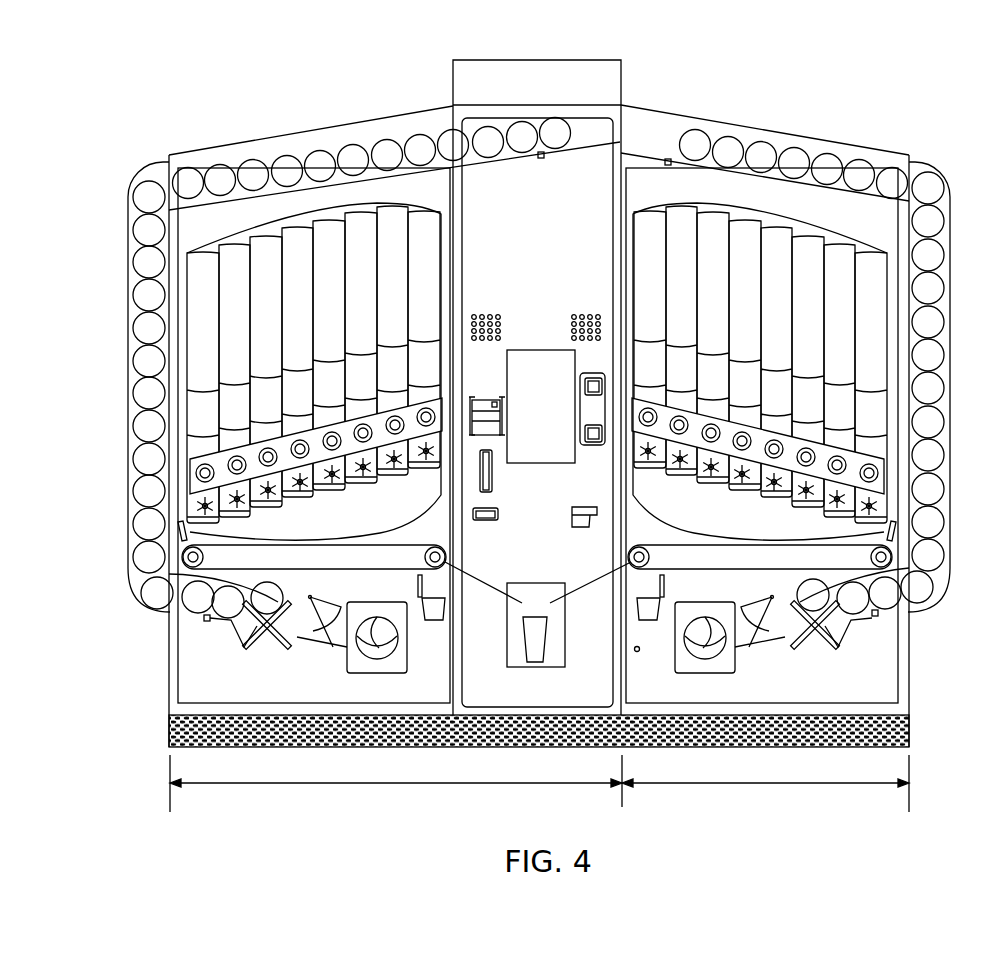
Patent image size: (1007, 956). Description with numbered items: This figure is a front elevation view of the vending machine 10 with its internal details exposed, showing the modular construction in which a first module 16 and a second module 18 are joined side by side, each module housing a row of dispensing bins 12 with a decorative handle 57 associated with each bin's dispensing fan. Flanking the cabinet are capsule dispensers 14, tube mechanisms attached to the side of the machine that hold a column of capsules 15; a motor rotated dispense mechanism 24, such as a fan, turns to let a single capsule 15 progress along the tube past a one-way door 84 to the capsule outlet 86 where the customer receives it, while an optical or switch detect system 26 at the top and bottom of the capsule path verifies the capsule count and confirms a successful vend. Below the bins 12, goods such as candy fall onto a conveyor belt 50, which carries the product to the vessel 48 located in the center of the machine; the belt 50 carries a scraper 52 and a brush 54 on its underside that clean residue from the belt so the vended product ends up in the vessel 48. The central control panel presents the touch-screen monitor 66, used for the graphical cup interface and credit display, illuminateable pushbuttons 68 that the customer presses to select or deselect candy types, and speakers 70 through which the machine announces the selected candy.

The vending machine 10 is at (188, 93).
The dispensing bin 12 is at (287, 310).
The capsule dispenser 14 is at (136, 184).
The capsule 15 is at (314, 150).
The first module 16 is at (425, 784).
The second module 18 is at (768, 784).
The motor rotated dispense mechanism 24 is at (267, 625).
The optical or switch detect system 26 is at (543, 160).
The vessel 48 is at (532, 652).
The conveyor belt 50 is at (393, 545).
The scraper 52 is at (181, 530).
The brush 54 is at (431, 597).
The decorative handle 57 is at (299, 494).
The touch-screen monitor 66 is at (549, 350).
The illuminateable pushbuttons 68 is at (208, 456).
The speakers 70 is at (493, 308).
The one-way door 84 is at (322, 622).
The capsule outlet 86 is at (377, 637).